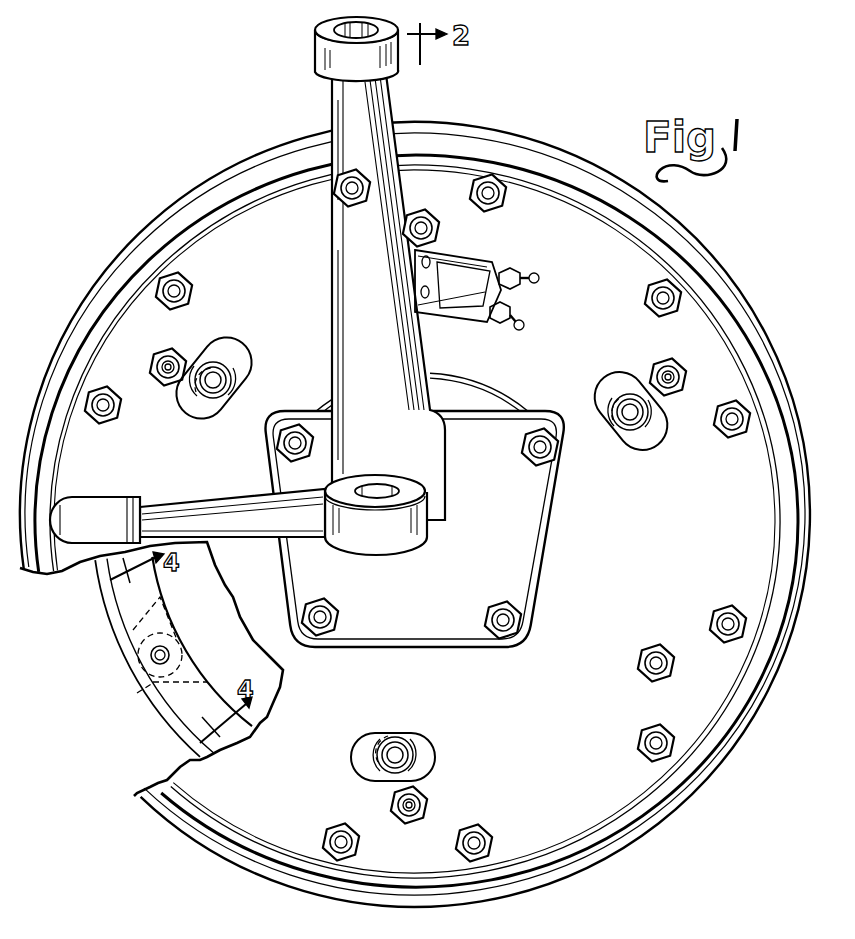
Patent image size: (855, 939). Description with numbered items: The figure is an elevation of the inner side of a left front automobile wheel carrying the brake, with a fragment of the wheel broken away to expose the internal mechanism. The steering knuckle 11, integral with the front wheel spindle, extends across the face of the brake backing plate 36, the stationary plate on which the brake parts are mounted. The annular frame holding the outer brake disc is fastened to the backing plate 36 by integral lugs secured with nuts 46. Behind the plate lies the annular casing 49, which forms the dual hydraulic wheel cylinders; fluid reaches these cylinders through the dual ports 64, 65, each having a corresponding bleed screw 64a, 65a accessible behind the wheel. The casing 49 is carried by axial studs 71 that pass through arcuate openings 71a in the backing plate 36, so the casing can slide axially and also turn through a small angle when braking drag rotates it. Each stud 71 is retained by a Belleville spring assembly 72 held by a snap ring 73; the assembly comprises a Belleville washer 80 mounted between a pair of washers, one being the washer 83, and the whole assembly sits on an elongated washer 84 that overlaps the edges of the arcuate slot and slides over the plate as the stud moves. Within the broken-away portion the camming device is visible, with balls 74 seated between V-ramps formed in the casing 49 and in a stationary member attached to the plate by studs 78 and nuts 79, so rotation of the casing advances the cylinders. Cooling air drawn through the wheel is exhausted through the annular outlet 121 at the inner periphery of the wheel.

The steering knuckle 11 is at (331, 272).
The backing plate 36 is at (662, 254).
The nuts 46 is at (492, 182).
The annular casing 49 is at (148, 700).
The port 64 is at (431, 261).
The bleed screw 64a is at (539, 278).
The port 65 is at (428, 294).
The bleed screw 65a is at (525, 323).
The axial studs 71 is at (203, 387).
The arcuate openings 71a is at (614, 376).
The Belleville spring assembly 72 is at (232, 352).
The snap ring 73 is at (218, 407).
The balls 74 is at (130, 631).
The studs 78 is at (178, 355).
The nuts 79 is at (155, 355).
The Belleville washer 80 is at (232, 388).
The washer 83 is at (246, 376).
The elongated washer 84 is at (232, 356).
The annular outlet 121 is at (513, 878).